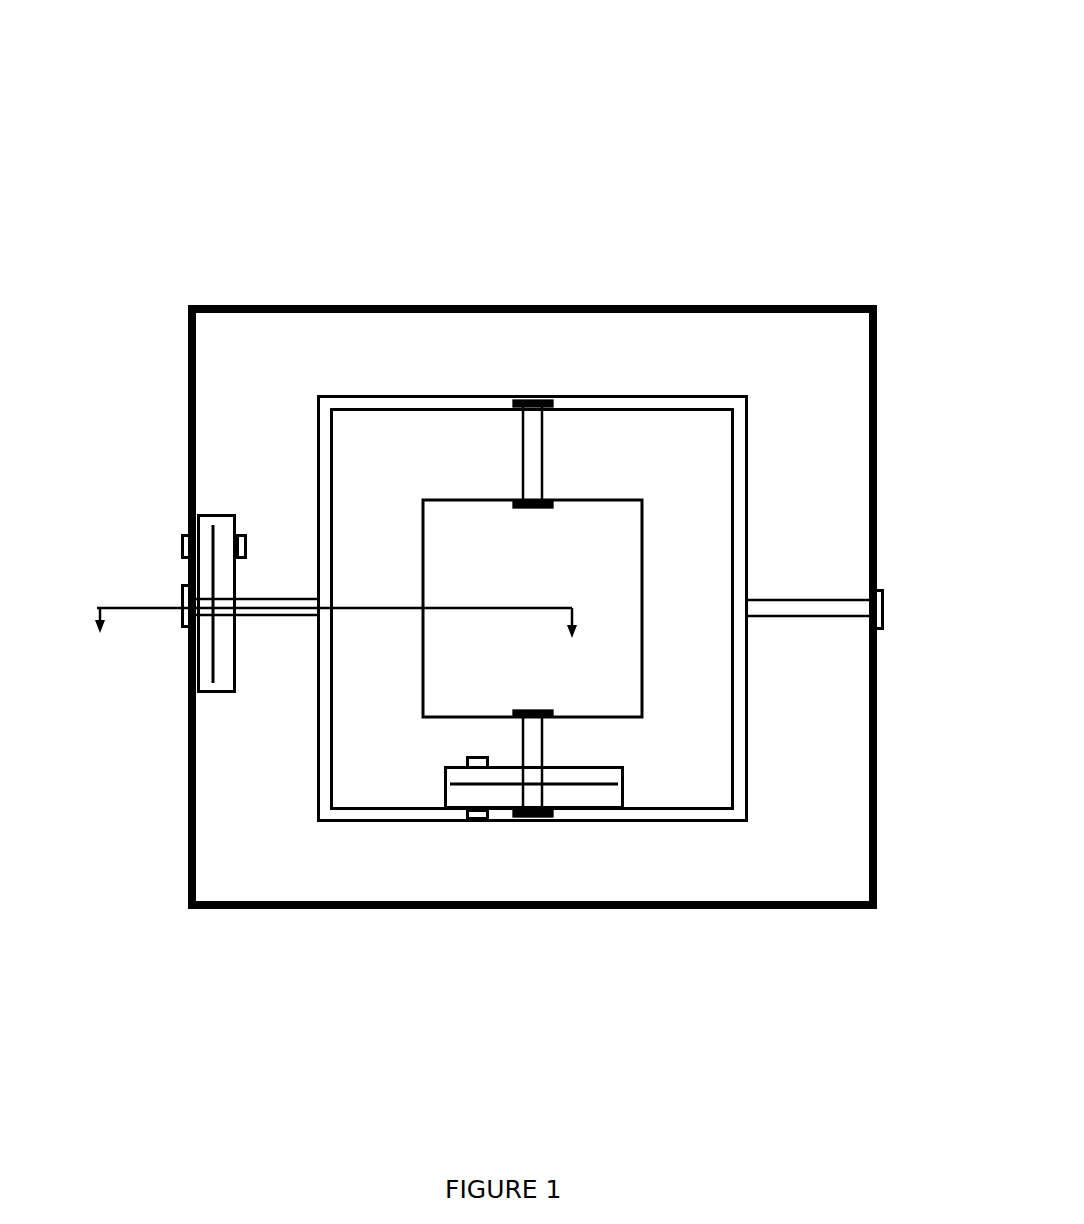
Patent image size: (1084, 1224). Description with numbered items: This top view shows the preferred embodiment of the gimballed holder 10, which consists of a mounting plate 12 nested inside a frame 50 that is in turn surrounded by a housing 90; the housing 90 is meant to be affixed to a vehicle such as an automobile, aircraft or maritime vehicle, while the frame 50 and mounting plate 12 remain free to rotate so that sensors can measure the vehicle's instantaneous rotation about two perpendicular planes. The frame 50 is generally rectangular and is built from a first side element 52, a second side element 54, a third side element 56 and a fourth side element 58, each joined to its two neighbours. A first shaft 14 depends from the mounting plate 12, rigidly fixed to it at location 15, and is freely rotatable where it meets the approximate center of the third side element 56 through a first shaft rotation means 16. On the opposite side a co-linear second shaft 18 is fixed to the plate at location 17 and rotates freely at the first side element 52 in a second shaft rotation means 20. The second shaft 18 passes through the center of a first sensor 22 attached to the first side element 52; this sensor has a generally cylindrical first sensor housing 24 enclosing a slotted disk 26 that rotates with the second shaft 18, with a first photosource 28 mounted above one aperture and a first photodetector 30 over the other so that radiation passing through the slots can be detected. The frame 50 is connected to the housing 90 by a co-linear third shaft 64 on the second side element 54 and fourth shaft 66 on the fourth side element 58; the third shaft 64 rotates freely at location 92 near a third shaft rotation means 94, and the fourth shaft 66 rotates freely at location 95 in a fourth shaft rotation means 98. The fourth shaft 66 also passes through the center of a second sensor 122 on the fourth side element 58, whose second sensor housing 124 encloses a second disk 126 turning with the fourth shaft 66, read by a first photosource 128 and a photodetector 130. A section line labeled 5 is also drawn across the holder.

The gimballed holder 10 is at (296, 143).
The mounting plate 12 is at (630, 570).
The first shaft 14 is at (533, 453).
The location 15 is at (515, 505).
The first shaft rotation means 16 is at (530, 400).
The location 17 is at (512, 713).
The second shaft 18 is at (535, 742).
The second shaft rotation means 20 is at (535, 818).
The first sensor 22 is at (612, 798).
The first sensor housing 24 is at (595, 767).
The slotted disk 26 is at (490, 783).
The first photosource 28 is at (465, 760).
The first photodetector 30 is at (473, 818).
The frame 50 is at (315, 793).
The first side element 52 is at (655, 817).
The second side element 54 is at (742, 712).
The third side element 56 is at (648, 400).
The fourth side element 58 is at (325, 452).
The third shaft 64 is at (806, 608).
The fourth shaft 66 is at (278, 597).
The housing 90 is at (332, 908).
The location 92 is at (877, 628).
The third shaft rotation means 94 is at (882, 592).
The location 95 is at (188, 626).
The fourth shaft rotation means 98 is at (187, 593).
The second sensor 122 is at (228, 520).
The second sensor housing 124 is at (210, 695).
The second disk 126 is at (213, 648).
The first photosource 128 is at (247, 542).
The photodetector 130 is at (182, 540).
The section line 5 is at (335, 609).